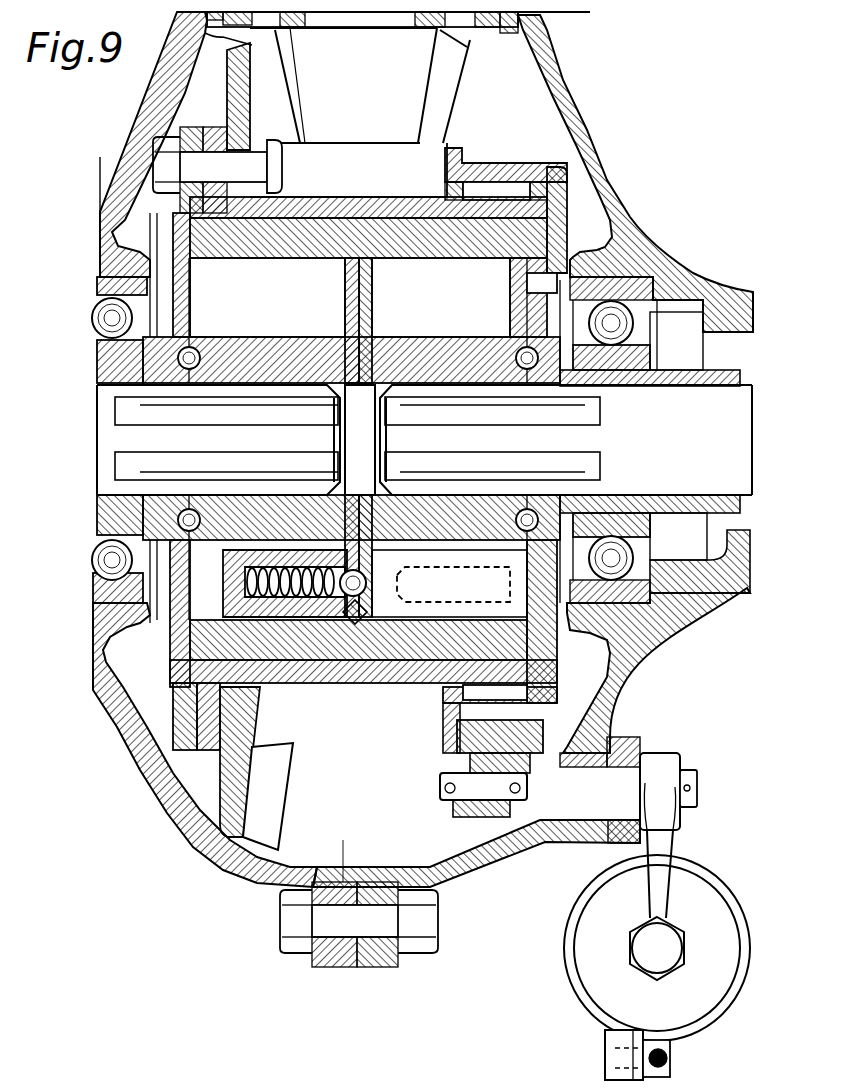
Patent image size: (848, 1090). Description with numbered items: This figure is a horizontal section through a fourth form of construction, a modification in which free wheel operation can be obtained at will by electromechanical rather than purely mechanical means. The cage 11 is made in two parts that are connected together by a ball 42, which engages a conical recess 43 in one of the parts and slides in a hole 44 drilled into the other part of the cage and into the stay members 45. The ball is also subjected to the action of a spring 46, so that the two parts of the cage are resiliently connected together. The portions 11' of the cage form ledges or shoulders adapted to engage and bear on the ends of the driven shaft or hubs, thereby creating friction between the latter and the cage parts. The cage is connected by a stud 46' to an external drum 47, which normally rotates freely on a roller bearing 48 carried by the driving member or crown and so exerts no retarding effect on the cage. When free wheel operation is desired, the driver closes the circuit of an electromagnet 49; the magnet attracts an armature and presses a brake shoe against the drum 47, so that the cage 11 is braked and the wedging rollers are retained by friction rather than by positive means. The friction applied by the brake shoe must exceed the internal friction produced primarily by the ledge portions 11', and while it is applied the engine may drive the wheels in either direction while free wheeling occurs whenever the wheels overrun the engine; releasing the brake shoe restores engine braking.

The cage 11 is at (441, 517).
The ledge or shoulder portions of the cage 11' is at (326, 437).
The ball 42 is at (368, 618).
The conical recess 43 is at (366, 577).
The hole 44 is at (340, 608).
The stay members 45 is at (313, 603).
The spring 46 is at (285, 636).
The stud 46' is at (508, 283).
The external drum 47 is at (497, 173).
The roller bearing 48 is at (495, 193).
The electromagnet 49 is at (702, 903).